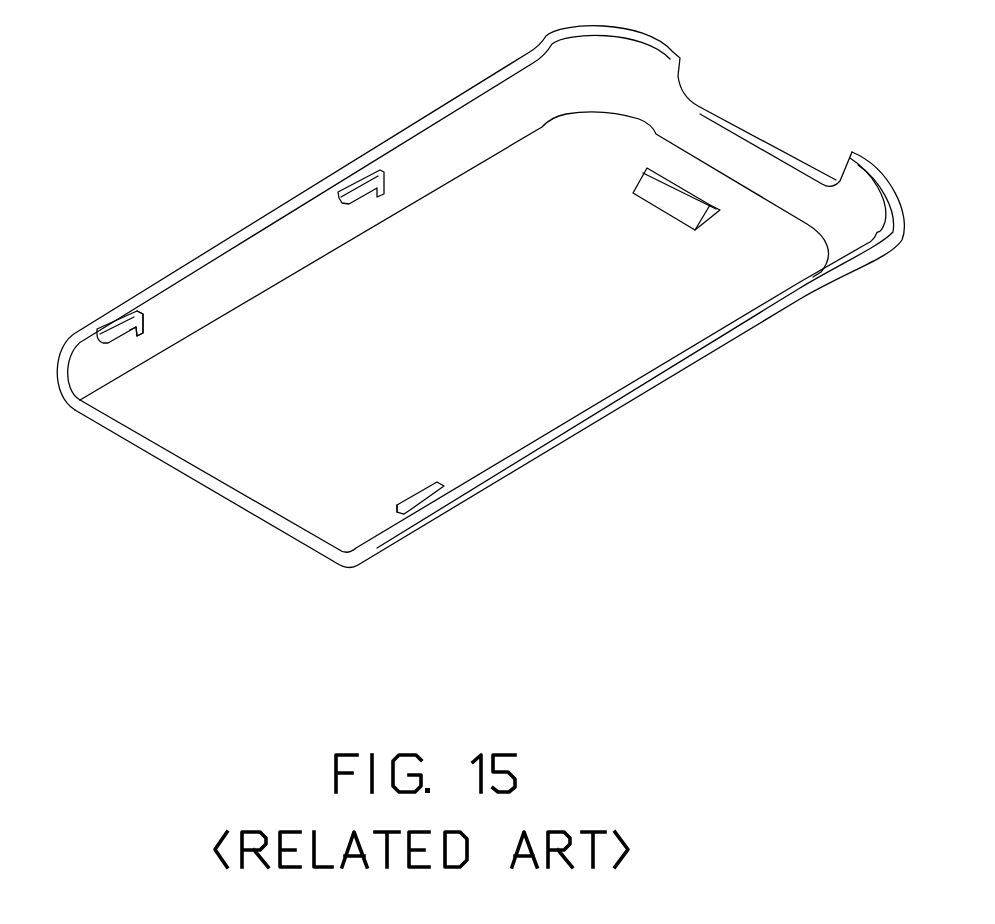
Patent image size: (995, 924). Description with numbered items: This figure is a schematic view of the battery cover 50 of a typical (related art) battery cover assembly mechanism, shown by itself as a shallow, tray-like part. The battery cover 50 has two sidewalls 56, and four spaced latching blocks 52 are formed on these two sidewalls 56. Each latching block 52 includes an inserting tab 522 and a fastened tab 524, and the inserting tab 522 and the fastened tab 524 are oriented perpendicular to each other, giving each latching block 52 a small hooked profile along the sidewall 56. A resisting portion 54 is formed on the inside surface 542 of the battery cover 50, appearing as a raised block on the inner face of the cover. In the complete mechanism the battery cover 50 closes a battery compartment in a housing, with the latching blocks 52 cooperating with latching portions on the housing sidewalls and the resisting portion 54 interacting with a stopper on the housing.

The battery cover 50 is at (465, 295).
The latching block 52 is at (89, 278).
The inserting tab 522 is at (115, 313).
The fastened tab 524 is at (124, 290).
The resisting portion 54 is at (682, 208).
The inside surface 542 is at (527, 195).
The sidewall 56 is at (310, 232).